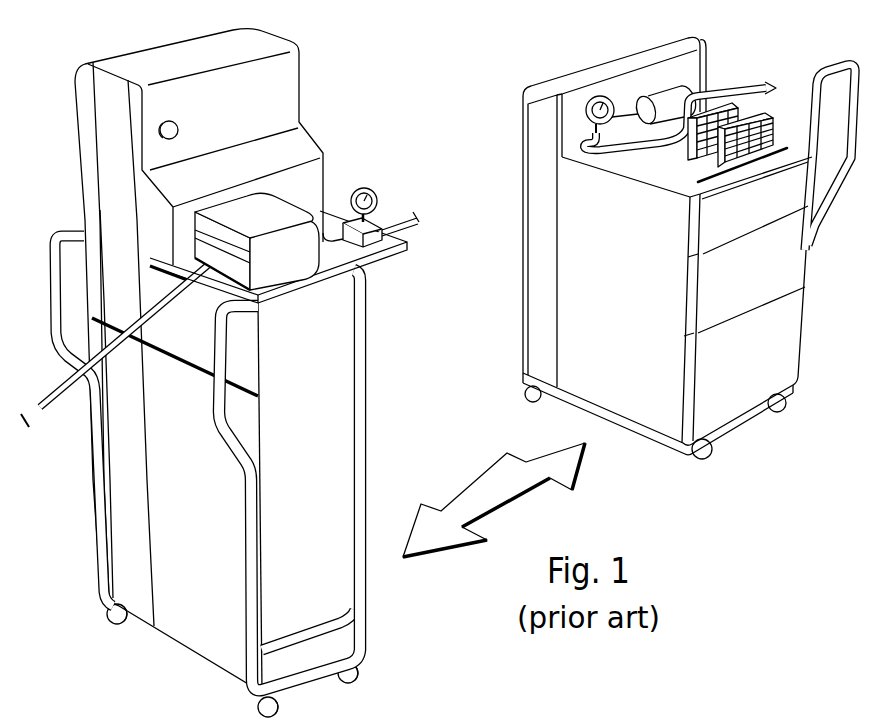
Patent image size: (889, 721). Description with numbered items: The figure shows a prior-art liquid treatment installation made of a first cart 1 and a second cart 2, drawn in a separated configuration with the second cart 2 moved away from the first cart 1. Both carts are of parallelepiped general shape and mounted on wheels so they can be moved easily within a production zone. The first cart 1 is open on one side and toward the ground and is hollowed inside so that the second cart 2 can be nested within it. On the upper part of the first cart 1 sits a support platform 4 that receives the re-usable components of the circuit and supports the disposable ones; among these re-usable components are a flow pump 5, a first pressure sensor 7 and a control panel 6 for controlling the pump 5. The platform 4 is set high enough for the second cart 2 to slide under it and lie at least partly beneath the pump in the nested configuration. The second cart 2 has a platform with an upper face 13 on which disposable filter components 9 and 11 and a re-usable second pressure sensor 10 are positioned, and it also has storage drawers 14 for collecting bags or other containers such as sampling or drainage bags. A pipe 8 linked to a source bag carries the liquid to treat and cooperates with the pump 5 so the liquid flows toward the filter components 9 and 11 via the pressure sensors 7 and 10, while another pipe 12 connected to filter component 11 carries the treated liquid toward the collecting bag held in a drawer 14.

The first cart 1 is at (173, 515).
The second cart 2 is at (808, 262).
The support platform 4 is at (328, 224).
The flow pump 5 is at (245, 210).
The control panel 6 is at (282, 88).
The first pressure sensor 7 is at (374, 191).
The pipe 8 is at (57, 396).
The filter component 9 is at (758, 116).
The second pressure sensor 10 is at (592, 97).
The filter component 11 is at (667, 98).
The pipe 12 is at (732, 87).
The upper face 13 is at (665, 172).
The storage drawers 14 is at (778, 272).